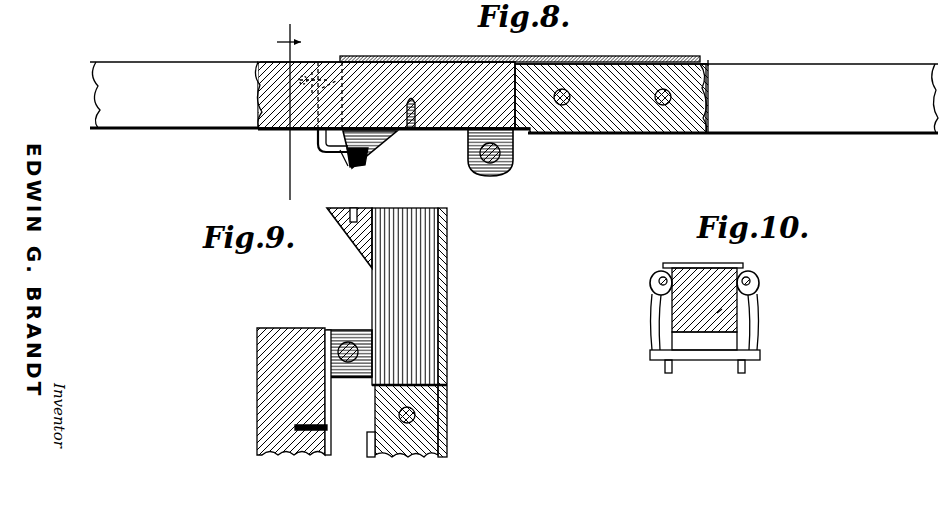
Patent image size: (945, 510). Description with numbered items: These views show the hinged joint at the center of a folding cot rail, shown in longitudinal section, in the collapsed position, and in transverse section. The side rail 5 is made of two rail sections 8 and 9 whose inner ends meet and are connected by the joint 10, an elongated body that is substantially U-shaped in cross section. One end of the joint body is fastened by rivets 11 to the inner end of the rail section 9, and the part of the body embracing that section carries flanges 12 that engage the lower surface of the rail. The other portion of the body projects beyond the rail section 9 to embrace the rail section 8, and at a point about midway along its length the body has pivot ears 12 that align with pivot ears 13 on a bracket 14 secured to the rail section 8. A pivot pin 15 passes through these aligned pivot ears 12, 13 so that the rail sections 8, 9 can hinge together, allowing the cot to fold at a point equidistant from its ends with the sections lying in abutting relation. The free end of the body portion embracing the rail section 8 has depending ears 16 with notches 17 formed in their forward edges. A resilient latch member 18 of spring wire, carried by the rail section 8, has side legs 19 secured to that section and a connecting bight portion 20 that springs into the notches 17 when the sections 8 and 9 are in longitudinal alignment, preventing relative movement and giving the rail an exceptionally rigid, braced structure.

In FIG. 8, the side rail 5 is at (735, 66).
In FIG. 9, the side rail 5 is at (285, 416).
In FIG. 10, the side rail 5 is at (717, 313).
In FIG. 8, the rail section 8 is at (182, 128).
In FIG. 9, the rail section 8 is at (257, 390).
In FIG. 10, the rail section 8 is at (692, 268).
In FIG. 8, the rail section 9 is at (790, 82).
In FIG. 9, the rail section 9 is at (432, 437).
In FIG. 8, the joint 10 is at (650, 50).
In FIG. 9, the joint 10 is at (460, 364).
In FIG. 10, the joint 10 is at (742, 263).
In FIG. 8, the rivets 11 is at (560, 107).
In FIG. 9, the rivets 11 is at (440, 401).
In FIG. 8, the flanges / pivot ears 12 is at (656, 136).
In FIG. 9, the flanges / pivot ears 12 is at (367, 456).
In FIG. 8, the pivot ears 13 is at (500, 173).
In FIG. 9, the pivot ears 13 is at (342, 330).
In FIG. 8, the bracket 14 is at (413, 132).
In FIG. 9, the bracket 14 is at (325, 366).
In FIG. 8, the pivot pin 15 is at (478, 168).
In FIG. 9, the pivot pin 15 is at (352, 378).
In FIG. 8, the depending ears 16 is at (374, 153).
In FIG. 9, the depending ears 16 is at (352, 243).
In FIG. 10, the depending ears 16 is at (668, 374).
In FIG. 8, the notches 17 is at (340, 166).
In FIG. 9, the notches 17 is at (352, 192).
In FIG. 10, the notches 17 is at (746, 368).
In FIG. 8, the resilient latch member 18 is at (314, 148).
In FIG. 10, the resilient latch member 18 is at (758, 324).
In FIG. 8, the side legs 19 is at (326, 62).
In FIG. 10, the side legs 19 is at (658, 330).
In FIG. 8, the bight portion 20 is at (362, 171).
In FIG. 9, the bight portion 20 is at (353, 208).
In FIG. 10, the bight portion 20 is at (698, 362).